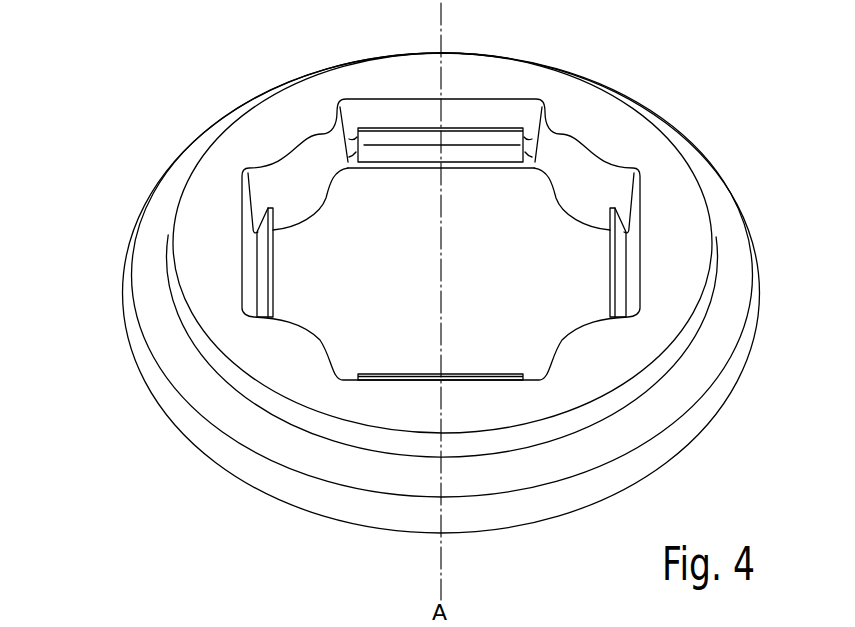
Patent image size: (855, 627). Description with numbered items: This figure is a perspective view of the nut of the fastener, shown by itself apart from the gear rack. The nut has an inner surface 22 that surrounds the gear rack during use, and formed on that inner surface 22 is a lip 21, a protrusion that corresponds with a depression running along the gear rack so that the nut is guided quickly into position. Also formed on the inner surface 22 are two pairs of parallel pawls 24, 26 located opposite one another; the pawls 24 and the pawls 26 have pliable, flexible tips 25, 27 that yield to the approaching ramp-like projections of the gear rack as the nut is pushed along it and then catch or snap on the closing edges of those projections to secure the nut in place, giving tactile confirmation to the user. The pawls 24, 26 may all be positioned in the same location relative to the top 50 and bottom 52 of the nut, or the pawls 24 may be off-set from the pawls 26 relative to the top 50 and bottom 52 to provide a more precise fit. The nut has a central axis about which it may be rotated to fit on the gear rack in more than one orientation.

The lip 21 is at (602, 152).
The inner surface 22 is at (572, 160).
The pawl 24 is at (503, 140).
The tip 25 is at (477, 133).
The pawl 26 is at (263, 288).
The tip 27 is at (273, 262).
The top 50 is at (288, 135).
The bottom 52 is at (712, 438).